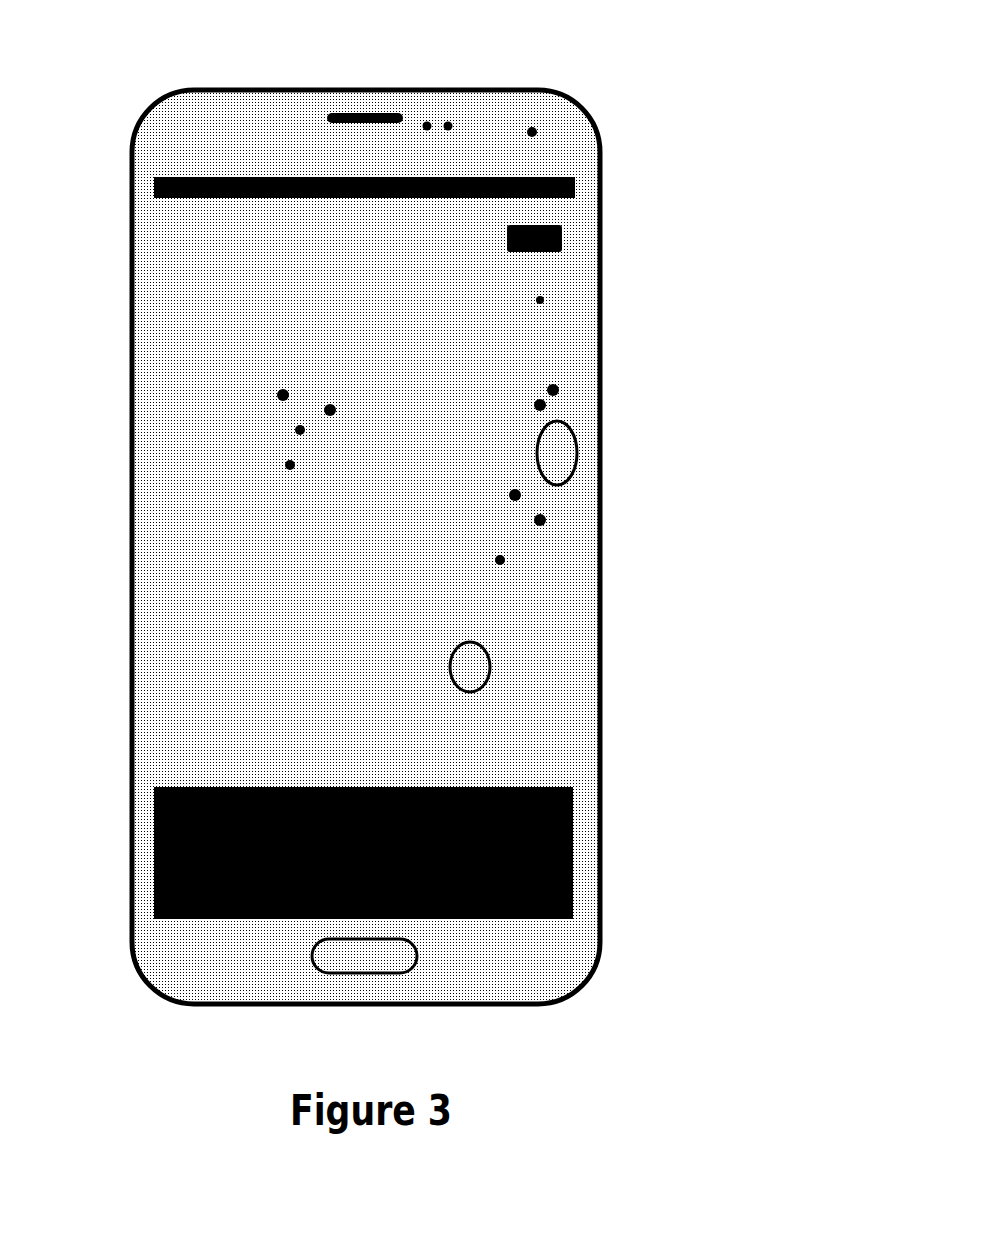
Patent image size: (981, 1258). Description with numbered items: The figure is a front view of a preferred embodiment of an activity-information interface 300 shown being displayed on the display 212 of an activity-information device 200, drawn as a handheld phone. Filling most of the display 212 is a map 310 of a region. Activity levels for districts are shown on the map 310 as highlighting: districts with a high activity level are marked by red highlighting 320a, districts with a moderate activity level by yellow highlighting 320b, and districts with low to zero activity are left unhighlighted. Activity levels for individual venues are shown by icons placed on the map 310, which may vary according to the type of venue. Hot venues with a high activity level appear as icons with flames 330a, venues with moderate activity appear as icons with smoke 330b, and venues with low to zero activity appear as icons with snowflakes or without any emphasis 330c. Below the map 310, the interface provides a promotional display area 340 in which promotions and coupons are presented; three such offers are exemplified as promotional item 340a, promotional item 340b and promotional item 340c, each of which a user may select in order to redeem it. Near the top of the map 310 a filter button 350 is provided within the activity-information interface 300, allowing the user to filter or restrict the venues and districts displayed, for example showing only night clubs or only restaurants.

The activity-information interface 300 is at (260, 54).
The activity-information device 200 is at (603, 101).
The display 212 is at (577, 200).
The filter button 350 is at (562, 242).
The map 310 is at (213, 678).
The red highlighting 320a is at (265, 437).
The yellow highlighting 320b is at (537, 355).
The icon with flames 330a is at (578, 452).
The icon with smoke 330b is at (566, 520).
The icon with snowflakes or without emphasis 330c is at (490, 667).
The promotional display area 340 is at (153, 853).
The promotional item 340a is at (226, 921).
The promotional item 340b is at (364, 921).
The promotional item 340c is at (497, 921).